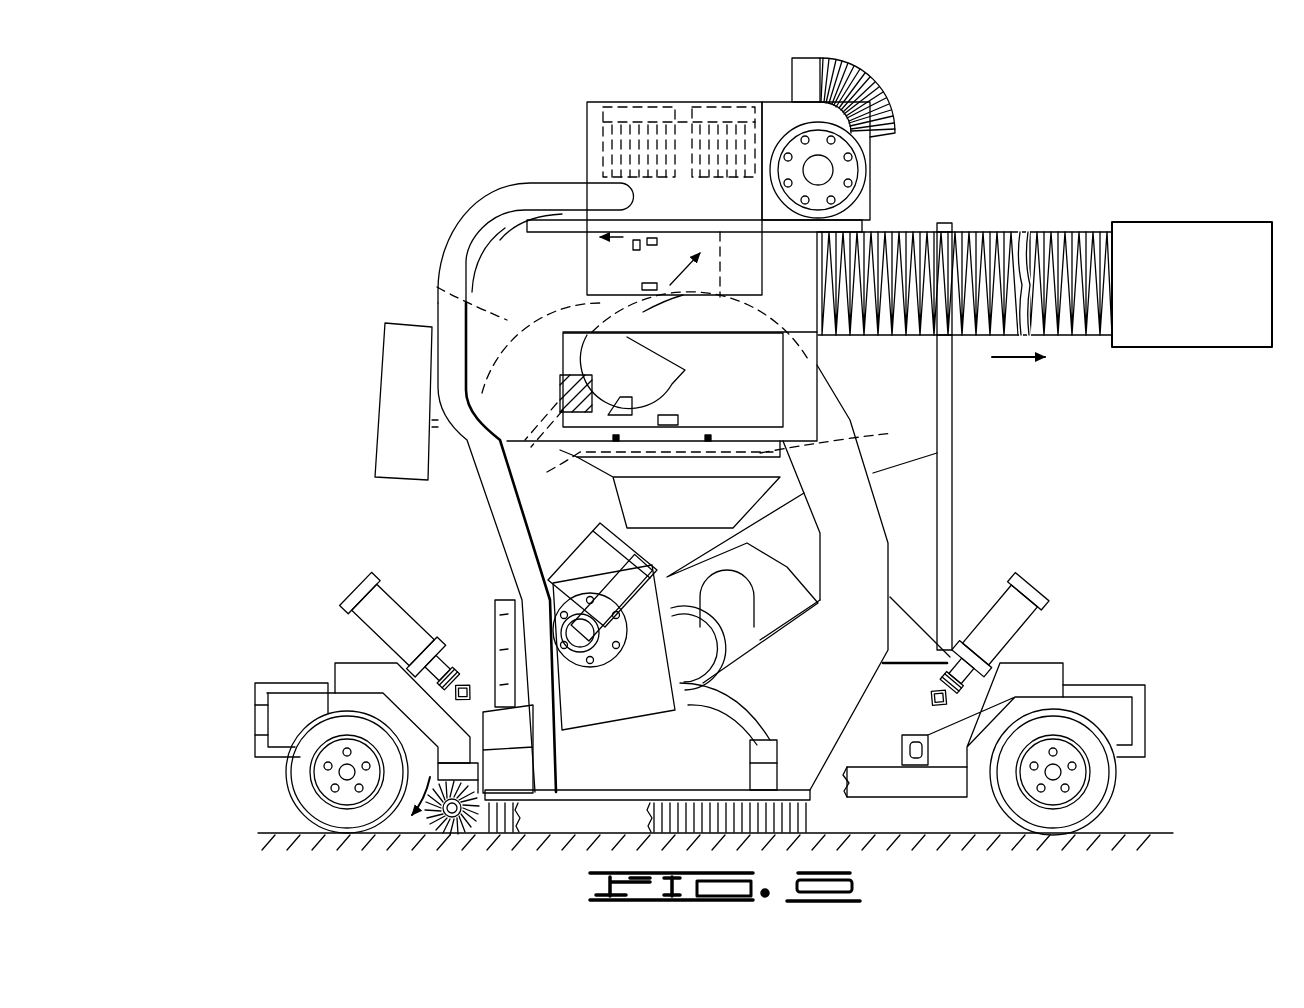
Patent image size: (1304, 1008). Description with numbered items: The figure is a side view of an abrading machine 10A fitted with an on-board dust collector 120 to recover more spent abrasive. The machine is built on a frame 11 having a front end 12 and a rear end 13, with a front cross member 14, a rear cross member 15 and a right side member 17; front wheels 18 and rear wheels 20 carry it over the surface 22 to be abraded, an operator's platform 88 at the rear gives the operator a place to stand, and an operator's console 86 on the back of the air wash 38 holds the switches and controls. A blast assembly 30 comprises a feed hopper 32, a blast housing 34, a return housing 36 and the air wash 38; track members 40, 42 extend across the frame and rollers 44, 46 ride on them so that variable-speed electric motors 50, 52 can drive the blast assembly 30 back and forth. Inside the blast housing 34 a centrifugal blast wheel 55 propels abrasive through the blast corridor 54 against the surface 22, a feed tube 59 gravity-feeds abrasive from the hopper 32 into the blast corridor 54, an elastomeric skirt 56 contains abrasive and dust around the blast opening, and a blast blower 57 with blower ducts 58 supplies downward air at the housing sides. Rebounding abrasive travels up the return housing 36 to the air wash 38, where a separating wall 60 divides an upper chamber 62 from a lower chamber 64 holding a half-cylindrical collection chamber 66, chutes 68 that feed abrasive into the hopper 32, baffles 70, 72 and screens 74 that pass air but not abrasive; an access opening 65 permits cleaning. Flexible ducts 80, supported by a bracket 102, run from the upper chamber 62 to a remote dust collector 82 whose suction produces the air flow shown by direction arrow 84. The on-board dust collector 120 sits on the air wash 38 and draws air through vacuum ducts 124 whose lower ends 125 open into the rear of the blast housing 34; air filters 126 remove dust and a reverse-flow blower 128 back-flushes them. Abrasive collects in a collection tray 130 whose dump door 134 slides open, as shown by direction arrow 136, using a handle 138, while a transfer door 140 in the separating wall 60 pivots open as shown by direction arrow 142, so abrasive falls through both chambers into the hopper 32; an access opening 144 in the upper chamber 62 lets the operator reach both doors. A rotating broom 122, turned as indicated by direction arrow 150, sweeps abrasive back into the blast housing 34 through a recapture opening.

The abrading machine 10A is at (312, 282).
The frame 11 is at (332, 656).
The front end 12 is at (1147, 717).
The rear end 13 is at (262, 722).
The front cross member 14 is at (1047, 667).
The rear cross member 15 is at (365, 660).
The right side member 17 is at (862, 787).
The front wheels 18 is at (1117, 790).
The rear wheels 20 is at (287, 780).
The surface 22 is at (933, 833).
The blast assembly 30 is at (490, 520).
The feed hopper 32 is at (717, 502).
The blast housing 34 is at (652, 763).
The return housing 36 is at (887, 510).
The air wash 38 is at (503, 243).
The track member 40 is at (930, 708).
The track member 42 is at (470, 690).
The roller 44 is at (935, 688).
The roller 46 is at (468, 703).
The variable-speed electric motor 50 is at (1037, 587).
The variable-speed electric motor 52 is at (362, 598).
The blast corridor 54 is at (587, 705).
The centrifugal blast wheel 55 is at (583, 597).
The elastomeric skirt 56 is at (760, 820).
The blast blower 57 is at (747, 588).
The blower ducts 58 is at (737, 690).
The feed tube 59 is at (596, 548).
The separating wall 60 is at (423, 283).
The upper chamber 62 is at (875, 196).
The lower chamber 64 is at (753, 393).
The access opening 65 is at (562, 358).
The collection chamber 66 is at (667, 355).
The chutes 68 is at (545, 470).
The baffle 70 is at (678, 418).
The baffle 72 is at (632, 404).
The screens 74 is at (557, 400).
The flexible ducts 80 is at (1007, 235).
The remote dust collector 82 is at (1160, 222).
The direction arrow 84 is at (1020, 360).
The operator's console 86 is at (380, 385).
The operator's platform 88 is at (290, 683).
The bracket 102 is at (943, 223).
The on-board dust collector 120 is at (583, 132).
The rotating broom 122 is at (437, 830).
The vacuum ducts 124 is at (443, 253).
The lower ends 125 is at (540, 837).
The air filters 126 is at (640, 110).
The reverse-flow blower 128 is at (880, 130).
The collection tray 130 is at (667, 222).
The dump door 134 is at (693, 247).
The direction arrow 136 is at (592, 243).
The handle 138 is at (647, 242).
The transfer door 140 is at (645, 310).
The direction arrow 142 is at (690, 298).
The access opening 144 is at (763, 280).
The direction arrow 150 is at (370, 830).